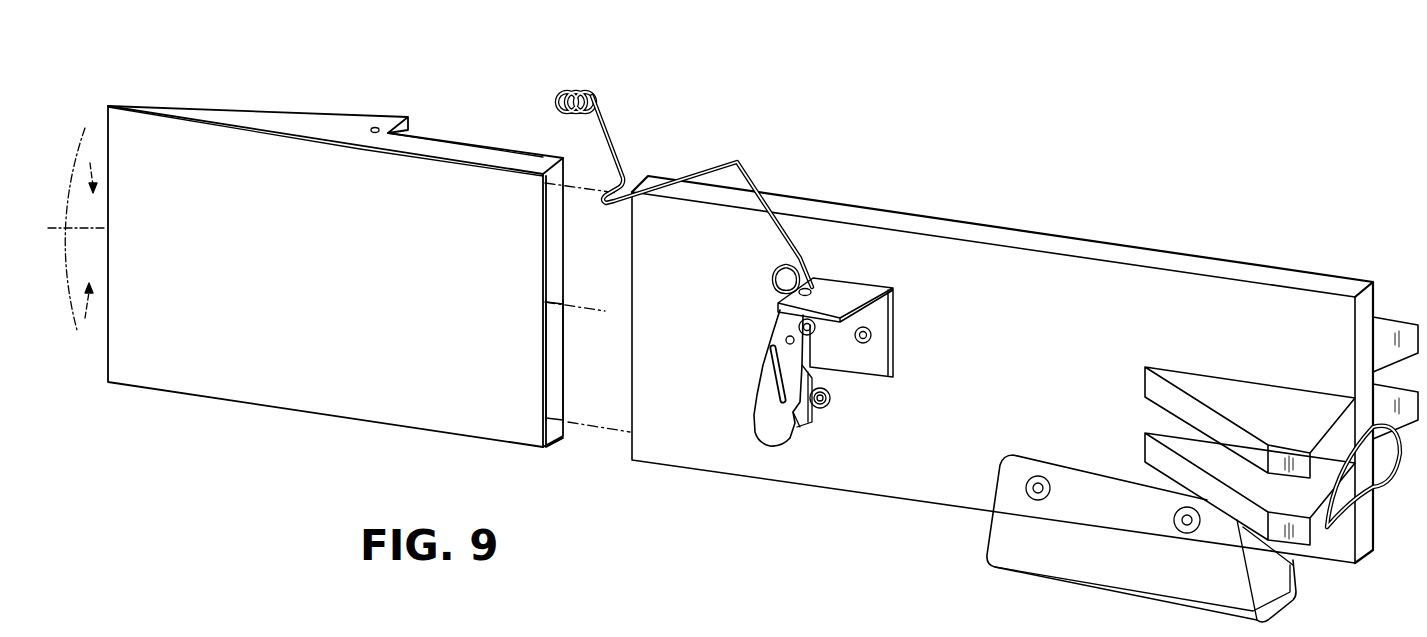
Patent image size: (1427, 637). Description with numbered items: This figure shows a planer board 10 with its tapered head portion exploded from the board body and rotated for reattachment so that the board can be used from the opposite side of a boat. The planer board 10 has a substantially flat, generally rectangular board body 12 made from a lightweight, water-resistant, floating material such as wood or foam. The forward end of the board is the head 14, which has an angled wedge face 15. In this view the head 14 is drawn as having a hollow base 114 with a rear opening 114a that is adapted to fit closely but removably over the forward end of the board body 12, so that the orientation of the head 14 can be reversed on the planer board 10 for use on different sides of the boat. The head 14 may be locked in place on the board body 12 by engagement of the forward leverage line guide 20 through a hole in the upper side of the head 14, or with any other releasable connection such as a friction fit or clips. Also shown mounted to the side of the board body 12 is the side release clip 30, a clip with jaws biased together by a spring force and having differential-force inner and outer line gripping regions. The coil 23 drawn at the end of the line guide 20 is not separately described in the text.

The planer board 10 is at (1040, 131).
The board body 12 is at (1105, 243).
The head 14 is at (265, 378).
The angled wedge face 15 is at (253, 106).
The forward leverage line guide 20 is at (652, 187).
The spring coil 23 is at (556, 108).
The side release clip 30 is at (781, 450).
The hollow base 114 is at (432, 143).
The rear opening 114a is at (558, 408).